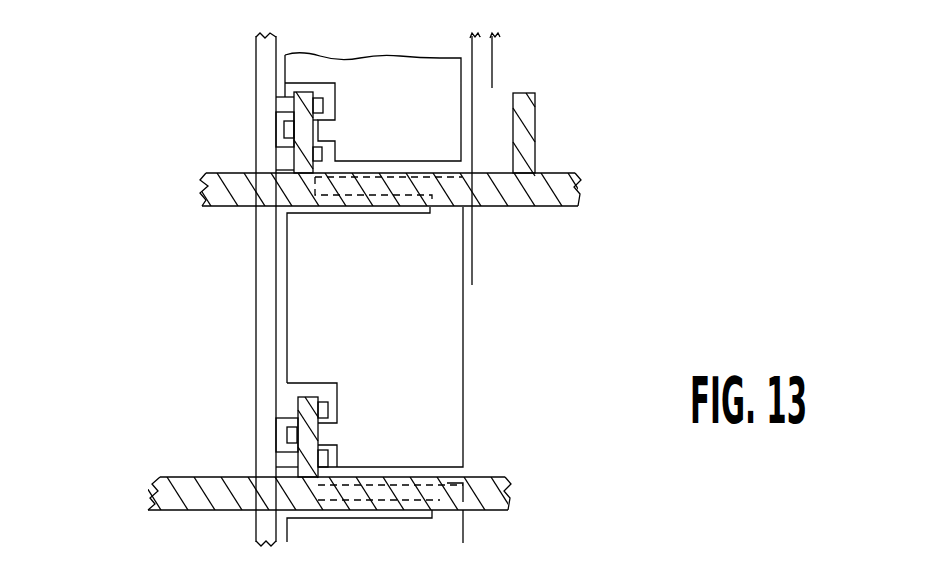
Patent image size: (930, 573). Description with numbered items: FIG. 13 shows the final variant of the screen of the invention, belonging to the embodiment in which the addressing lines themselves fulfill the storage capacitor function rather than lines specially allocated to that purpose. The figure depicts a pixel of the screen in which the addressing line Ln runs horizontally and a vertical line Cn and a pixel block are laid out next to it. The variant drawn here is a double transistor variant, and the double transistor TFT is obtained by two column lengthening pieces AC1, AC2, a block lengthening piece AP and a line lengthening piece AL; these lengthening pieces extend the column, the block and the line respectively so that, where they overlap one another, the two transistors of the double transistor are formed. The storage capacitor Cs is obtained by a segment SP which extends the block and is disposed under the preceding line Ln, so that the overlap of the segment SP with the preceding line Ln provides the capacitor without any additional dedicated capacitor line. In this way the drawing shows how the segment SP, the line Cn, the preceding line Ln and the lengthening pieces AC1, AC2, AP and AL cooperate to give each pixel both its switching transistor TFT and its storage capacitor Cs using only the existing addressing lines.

The storage capacitor line Cn is at (258, 56).
The preceding line Ln is at (233, 187).
The segment extending the block SP is at (390, 176).
The storage capacitor Cs is at (409, 222).
The thin film transistor TFT is at (314, 372).
The line lengthening piece AL is at (298, 403).
The block lengthening piece AP is at (287, 435).
The column lengthening piece AC1 is at (325, 410).
The column lengthening piece AC2 is at (326, 461).